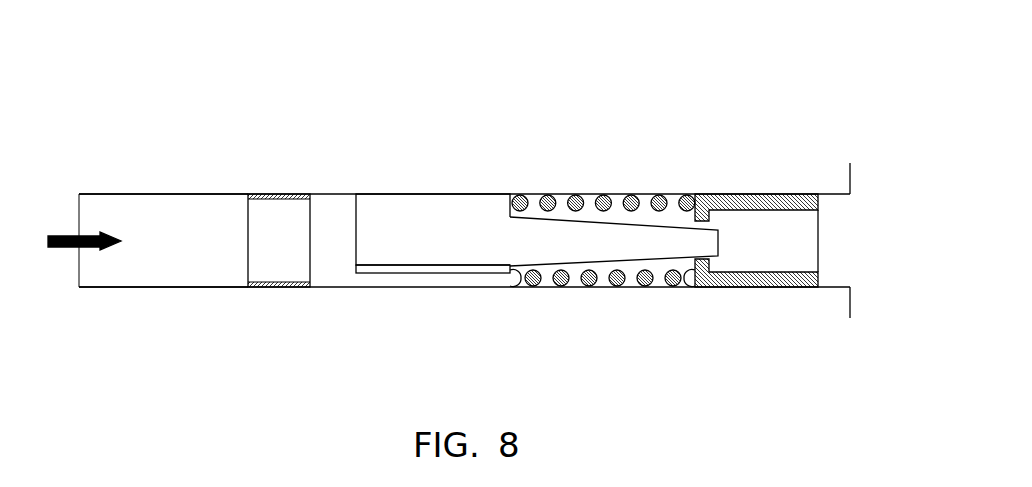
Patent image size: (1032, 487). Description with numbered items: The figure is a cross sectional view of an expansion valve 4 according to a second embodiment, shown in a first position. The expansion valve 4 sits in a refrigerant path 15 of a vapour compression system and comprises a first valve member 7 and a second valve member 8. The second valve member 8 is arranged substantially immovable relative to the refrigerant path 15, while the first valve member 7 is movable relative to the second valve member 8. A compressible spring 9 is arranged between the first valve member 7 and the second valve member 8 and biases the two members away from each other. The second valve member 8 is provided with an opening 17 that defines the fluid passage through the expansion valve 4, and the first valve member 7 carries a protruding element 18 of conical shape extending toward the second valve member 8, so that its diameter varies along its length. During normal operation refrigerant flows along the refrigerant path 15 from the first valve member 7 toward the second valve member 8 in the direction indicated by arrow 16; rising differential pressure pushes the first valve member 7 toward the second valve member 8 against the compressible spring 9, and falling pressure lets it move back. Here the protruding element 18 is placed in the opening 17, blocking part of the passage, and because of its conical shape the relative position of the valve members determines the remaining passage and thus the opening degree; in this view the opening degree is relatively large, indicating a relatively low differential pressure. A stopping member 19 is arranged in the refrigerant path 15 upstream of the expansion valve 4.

The expansion valve 4 is at (125, 92).
The first valve member 7 is at (423, 225).
The second valve member 8 is at (778, 203).
The compressible spring 9 is at (603, 200).
The refrigerant path 15 is at (177, 261).
The arrow 16 is at (67, 232).
The opening 17 is at (703, 225).
The protruding element 18 is at (620, 243).
The stopping member 19 is at (287, 287).